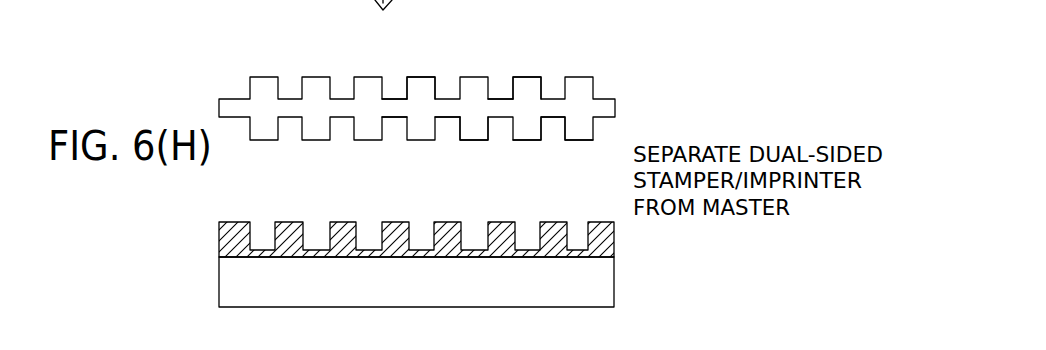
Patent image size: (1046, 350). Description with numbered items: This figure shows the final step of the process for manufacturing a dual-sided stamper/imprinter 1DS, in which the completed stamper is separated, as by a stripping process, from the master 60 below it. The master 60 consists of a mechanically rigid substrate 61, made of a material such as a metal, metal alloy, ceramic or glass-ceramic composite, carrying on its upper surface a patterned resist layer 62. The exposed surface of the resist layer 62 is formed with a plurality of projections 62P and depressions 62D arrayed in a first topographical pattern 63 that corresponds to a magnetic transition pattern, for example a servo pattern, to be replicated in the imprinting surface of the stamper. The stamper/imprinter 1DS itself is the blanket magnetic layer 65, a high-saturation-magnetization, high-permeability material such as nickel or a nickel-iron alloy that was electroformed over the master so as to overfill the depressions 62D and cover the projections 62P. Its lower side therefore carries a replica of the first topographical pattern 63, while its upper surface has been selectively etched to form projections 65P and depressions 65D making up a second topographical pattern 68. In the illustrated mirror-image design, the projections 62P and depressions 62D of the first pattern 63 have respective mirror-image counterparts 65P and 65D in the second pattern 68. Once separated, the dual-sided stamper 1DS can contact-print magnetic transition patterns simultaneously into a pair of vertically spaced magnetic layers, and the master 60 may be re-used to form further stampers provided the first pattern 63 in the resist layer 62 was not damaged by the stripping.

The dual-sided stamper/imprinter 1DS is at (603, 72).
The second topographical pattern 68 is at (425, 65).
The blanket magnetic layer 65 is at (432, 112).
The depressions 65D is at (502, 77).
The projections 65P is at (530, 64).
The first topographical pattern 63 is at (530, 145).
The depressions 62D is at (450, 118).
The projections 62P is at (478, 141).
The master 60 is at (401, 271).
The substrate 61 is at (420, 289).
The resist layer 62 is at (620, 240).